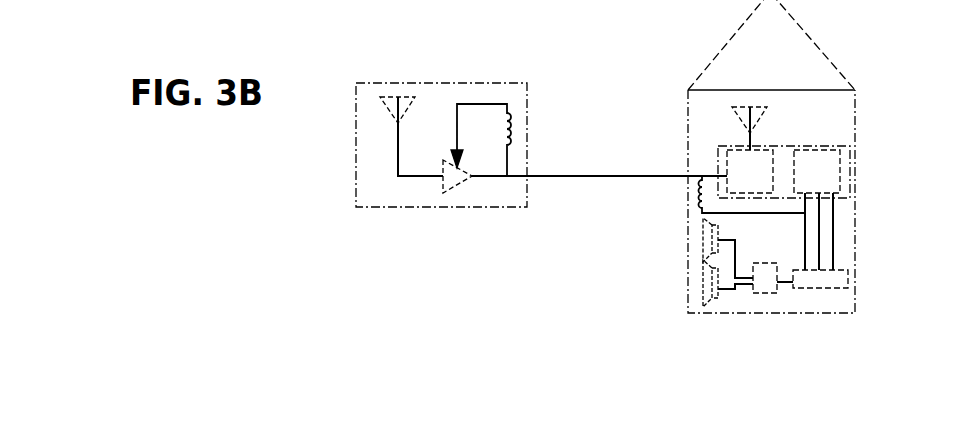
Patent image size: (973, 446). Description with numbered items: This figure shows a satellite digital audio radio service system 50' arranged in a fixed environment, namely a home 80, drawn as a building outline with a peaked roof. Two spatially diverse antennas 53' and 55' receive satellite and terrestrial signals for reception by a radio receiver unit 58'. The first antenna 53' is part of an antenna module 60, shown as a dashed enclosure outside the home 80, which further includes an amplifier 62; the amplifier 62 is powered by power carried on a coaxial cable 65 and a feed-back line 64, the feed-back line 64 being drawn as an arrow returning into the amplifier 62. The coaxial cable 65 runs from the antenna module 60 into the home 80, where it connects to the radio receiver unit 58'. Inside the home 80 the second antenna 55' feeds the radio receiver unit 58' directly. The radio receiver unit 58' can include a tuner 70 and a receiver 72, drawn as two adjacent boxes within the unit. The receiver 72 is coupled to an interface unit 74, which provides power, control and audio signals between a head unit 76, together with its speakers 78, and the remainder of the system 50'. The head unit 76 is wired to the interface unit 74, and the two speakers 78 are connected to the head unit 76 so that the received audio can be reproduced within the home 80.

The system 50' is at (248, 152).
The antenna 53' is at (411, 110).
The antenna 55' is at (769, 121).
The radio receiver unit 58' is at (784, 153).
The antenna module 60 is at (528, 82).
The amplifier 62 is at (453, 190).
The feed-back line 64 is at (474, 102).
The coaxial cable 65 is at (585, 177).
The tuner 70 is at (762, 185).
The receiver 72 is at (829, 185).
The interface unit 74 is at (843, 284).
The head unit 76 is at (762, 262).
The speakers 78 is at (702, 245).
The home 80 is at (815, 42).